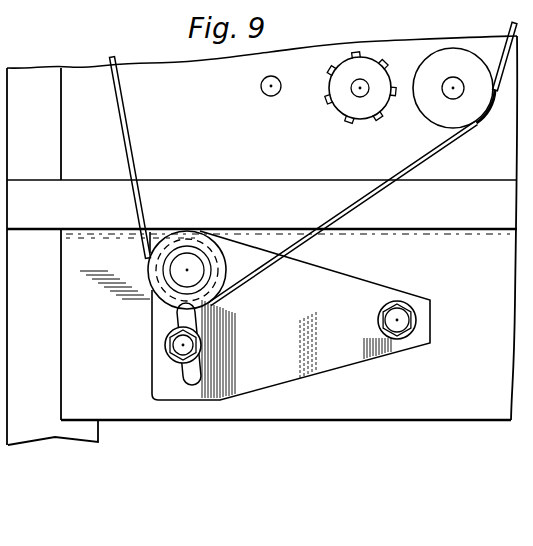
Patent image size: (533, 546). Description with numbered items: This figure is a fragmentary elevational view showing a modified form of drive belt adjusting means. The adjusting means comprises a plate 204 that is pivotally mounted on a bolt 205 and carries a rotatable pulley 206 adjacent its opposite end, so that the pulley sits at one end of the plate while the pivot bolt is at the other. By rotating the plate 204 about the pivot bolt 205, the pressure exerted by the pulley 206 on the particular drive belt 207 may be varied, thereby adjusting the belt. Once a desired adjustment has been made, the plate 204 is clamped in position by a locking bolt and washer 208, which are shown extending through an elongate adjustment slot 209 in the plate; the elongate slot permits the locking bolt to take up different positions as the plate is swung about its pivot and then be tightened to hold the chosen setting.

The plate 204 is at (317, 280).
The bolt 205 is at (400, 313).
The rotatable pulley 206 is at (212, 243).
The drive belt 207 is at (131, 136).
The locking bolt and washer 208 is at (175, 347).
The elongate adjustment slot 209 is at (174, 320).